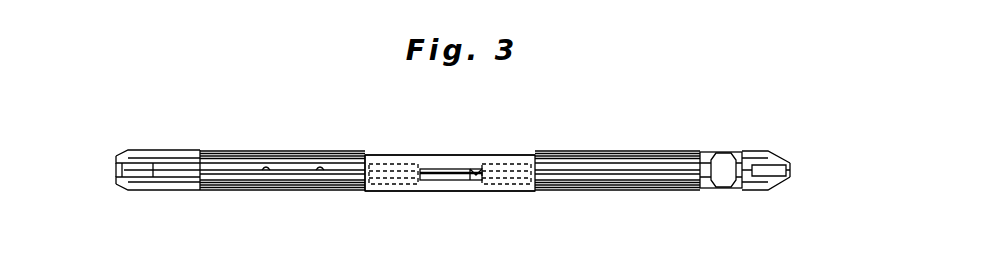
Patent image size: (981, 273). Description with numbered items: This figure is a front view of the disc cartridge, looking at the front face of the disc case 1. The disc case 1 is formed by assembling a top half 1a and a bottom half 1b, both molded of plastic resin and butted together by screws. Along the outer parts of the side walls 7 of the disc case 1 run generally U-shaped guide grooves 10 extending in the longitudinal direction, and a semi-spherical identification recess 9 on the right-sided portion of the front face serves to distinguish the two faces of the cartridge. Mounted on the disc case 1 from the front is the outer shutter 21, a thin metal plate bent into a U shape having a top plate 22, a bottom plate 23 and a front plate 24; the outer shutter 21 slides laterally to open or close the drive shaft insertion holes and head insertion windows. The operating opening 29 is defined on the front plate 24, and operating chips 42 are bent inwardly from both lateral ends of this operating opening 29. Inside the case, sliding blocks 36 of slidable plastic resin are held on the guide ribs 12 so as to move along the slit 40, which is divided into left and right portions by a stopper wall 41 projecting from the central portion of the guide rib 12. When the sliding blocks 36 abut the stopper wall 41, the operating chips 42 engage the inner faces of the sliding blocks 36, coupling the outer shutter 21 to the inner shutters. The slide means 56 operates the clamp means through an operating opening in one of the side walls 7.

The disc case 1 is at (629, 152).
The top half 1a is at (170, 191).
The bottom half 1b is at (165, 150).
The side wall 7 is at (118, 153).
The identification recess 9 is at (716, 190).
The guide groove 10 is at (118, 170).
The guide rib 12 is at (266, 168).
The outer shutter 21 is at (507, 157).
The top plate 22 is at (381, 156).
The bottom plate 23 is at (377, 194).
The front plate 24 is at (406, 158).
The operating opening 29 is at (468, 180).
The sliding block 36 is at (398, 190).
The slit 40 is at (250, 190).
The stopper wall 41 is at (431, 180).
The operating chip 42 is at (473, 166).
The slide means 56 is at (791, 170).